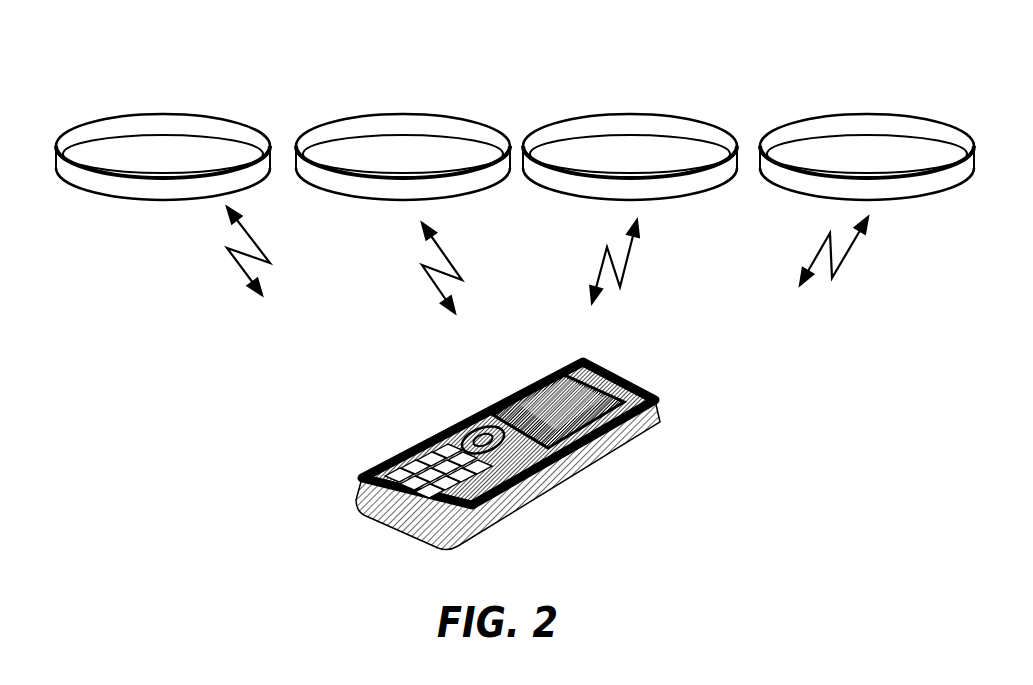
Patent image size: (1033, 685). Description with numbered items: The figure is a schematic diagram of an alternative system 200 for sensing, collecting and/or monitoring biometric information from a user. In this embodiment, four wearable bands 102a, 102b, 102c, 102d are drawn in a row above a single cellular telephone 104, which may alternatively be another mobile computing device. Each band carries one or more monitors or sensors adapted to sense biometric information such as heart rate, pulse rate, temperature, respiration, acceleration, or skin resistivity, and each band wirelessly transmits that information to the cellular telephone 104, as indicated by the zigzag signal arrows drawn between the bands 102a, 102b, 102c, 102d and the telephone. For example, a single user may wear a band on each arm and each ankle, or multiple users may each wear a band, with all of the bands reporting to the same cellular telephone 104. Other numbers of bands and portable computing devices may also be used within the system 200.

The alternative system 200 is at (752, 80).
The band 102a is at (107, 181).
The band 102b is at (327, 181).
The band 102c is at (565, 180).
The band 102d is at (937, 197).
The cellular telephone 104 is at (597, 437).